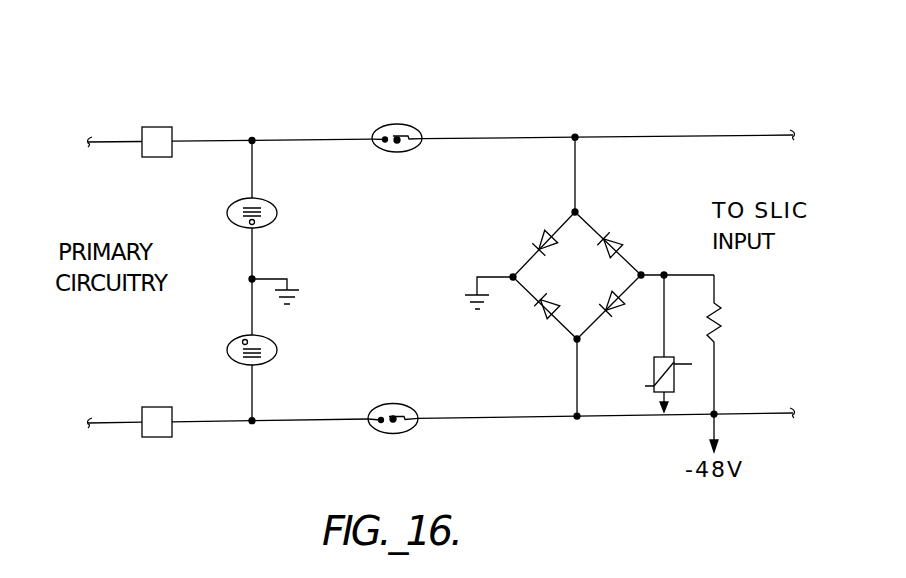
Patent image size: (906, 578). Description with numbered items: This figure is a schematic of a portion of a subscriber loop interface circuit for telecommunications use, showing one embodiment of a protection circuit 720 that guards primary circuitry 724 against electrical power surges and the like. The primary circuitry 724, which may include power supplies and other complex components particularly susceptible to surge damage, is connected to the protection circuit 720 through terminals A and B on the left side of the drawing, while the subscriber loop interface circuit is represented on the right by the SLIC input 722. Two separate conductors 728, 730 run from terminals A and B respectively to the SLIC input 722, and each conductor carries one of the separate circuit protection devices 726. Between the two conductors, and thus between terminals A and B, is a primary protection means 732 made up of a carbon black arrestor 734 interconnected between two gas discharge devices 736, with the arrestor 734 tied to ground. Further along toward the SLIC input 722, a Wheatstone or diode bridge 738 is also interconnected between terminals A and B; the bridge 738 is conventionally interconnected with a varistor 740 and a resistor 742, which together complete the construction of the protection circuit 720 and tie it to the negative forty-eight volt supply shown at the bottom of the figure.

The protection circuit 720 is at (524, 81).
The SLIC input 722 is at (797, 116).
The primary circuitry 724 is at (90, 117).
The circuit protection devices 726 is at (393, 117).
The conductor 728 is at (298, 139).
The conductor 730 is at (318, 425).
The primary protection means 732 is at (360, 261).
The carbon black arrestor 734 is at (272, 277).
The gas discharge devices 736 is at (273, 199).
The diode bridge 738 is at (617, 228).
The varistor 740 is at (648, 372).
The resistor 742 is at (725, 319).